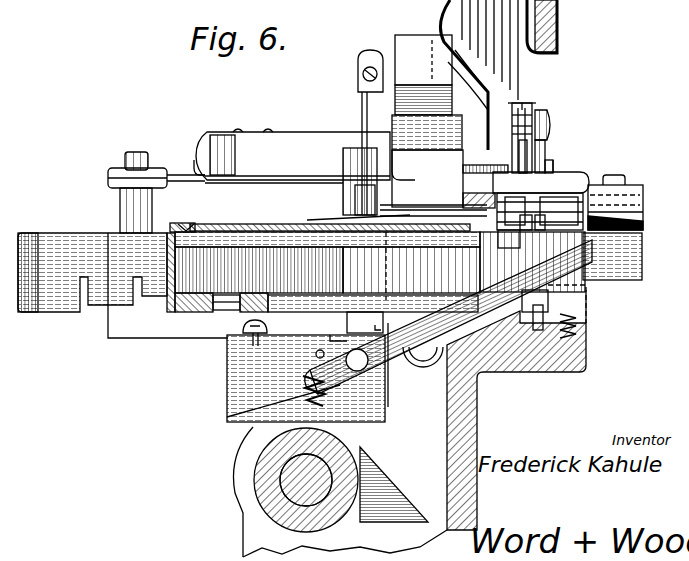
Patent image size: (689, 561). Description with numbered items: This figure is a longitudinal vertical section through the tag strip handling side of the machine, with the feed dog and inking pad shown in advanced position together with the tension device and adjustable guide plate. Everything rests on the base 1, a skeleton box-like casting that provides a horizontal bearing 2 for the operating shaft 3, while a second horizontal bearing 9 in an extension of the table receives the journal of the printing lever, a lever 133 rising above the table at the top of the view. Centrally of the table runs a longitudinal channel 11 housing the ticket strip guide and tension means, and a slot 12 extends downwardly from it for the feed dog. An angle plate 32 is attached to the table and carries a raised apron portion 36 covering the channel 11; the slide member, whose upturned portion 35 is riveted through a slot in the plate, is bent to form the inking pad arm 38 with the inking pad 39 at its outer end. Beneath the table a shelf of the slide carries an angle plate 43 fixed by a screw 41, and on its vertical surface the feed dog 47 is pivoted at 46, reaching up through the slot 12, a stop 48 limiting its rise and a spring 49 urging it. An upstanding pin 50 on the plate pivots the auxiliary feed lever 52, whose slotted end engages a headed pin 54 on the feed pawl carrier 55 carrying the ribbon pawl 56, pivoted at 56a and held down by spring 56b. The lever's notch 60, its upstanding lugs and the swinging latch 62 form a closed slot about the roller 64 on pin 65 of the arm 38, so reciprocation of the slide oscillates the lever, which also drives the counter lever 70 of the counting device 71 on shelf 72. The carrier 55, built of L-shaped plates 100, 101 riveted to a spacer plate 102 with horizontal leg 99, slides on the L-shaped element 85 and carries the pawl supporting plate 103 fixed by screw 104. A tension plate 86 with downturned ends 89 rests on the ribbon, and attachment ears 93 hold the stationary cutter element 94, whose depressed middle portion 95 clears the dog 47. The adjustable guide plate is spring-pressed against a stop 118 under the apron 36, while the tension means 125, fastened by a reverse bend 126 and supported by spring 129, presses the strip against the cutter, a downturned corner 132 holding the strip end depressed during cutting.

The base 1 is at (475, 490).
The horizontal bearing 2 is at (352, 447).
The operating shaft 3 is at (275, 482).
The horizontal bearing 9 is at (382, 150).
The longitudinal channel 11 is at (425, 290).
The slot 12 is at (324, 299).
The angle plate 32 is at (108, 338).
The upturned portion 35 is at (307, 328).
The raised apron portion 36 is at (262, 217).
The inking pad arm 38 is at (423, 208).
The inking pad 39 is at (575, 170).
The screw 41 is at (265, 330).
The angle plate 43 is at (230, 362).
The pivot 46 is at (358, 372).
The feed dog 47 is at (507, 247).
The stop 48 is at (367, 359).
The spring 49 is at (227, 415).
The upstanding pin 50 is at (122, 207).
The auxiliary feed lever 52 is at (174, 175).
The headed pin 54 is at (463, 167).
The feed pawl carrier 55 is at (530, 98).
The pawl 56 is at (548, 153).
The pivot 56a is at (548, 138).
The spring 56b is at (553, 162).
The elongated notch 60 is at (305, 183).
The swinging latch 62 is at (318, 123).
The roller 64 is at (343, 160).
The pin 65 is at (355, 197).
The counter lever 70 is at (358, 80).
The counting device 71 is at (398, 42).
The shelf 72 is at (458, 108).
The L-shaped element 85 is at (523, 152).
The tension plate 86 is at (595, 176).
The downward bent ends 89 is at (523, 223).
The attachment ears 93 is at (623, 190).
The stationary cutter element 94 is at (593, 213).
The middle horizontal portion 95 is at (537, 230).
The horizontal leg 99 is at (490, 198).
The L-shaped metal plate 100 is at (525, 133).
The L-shaped metal plate 101 is at (512, 132).
The spacer plate 102 is at (517, 115).
The pawl supporting plate 103 is at (535, 108).
The screw 104 is at (550, 113).
The stop 118 is at (218, 217).
The tension means 125 is at (259, 270).
The reverse bend 126 is at (168, 262).
The spring 129 is at (586, 325).
The downturned corner 132 is at (647, 222).
The lever 133 is at (558, 12).